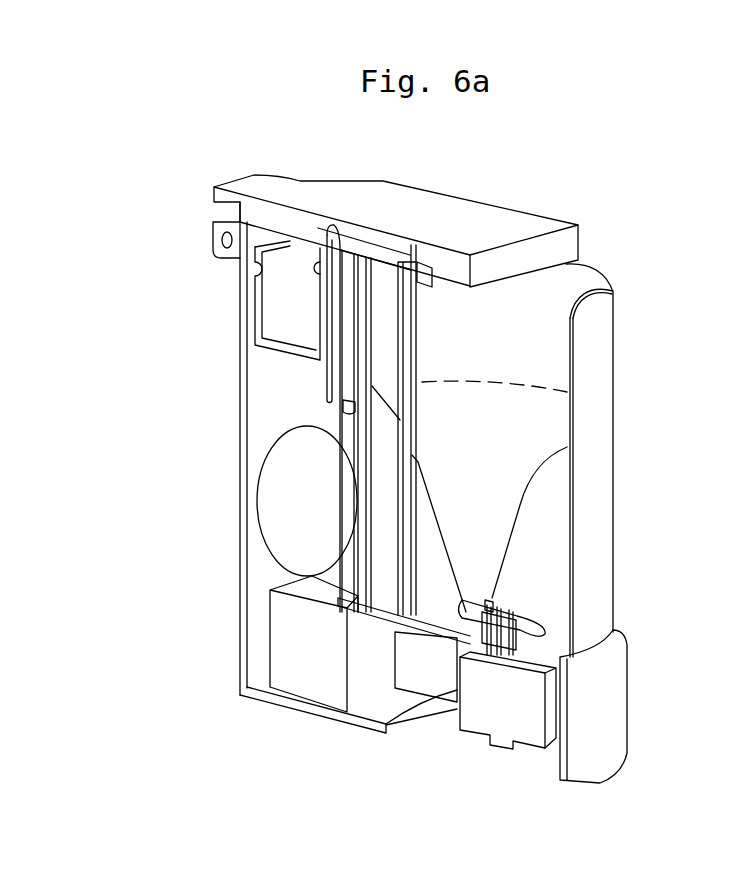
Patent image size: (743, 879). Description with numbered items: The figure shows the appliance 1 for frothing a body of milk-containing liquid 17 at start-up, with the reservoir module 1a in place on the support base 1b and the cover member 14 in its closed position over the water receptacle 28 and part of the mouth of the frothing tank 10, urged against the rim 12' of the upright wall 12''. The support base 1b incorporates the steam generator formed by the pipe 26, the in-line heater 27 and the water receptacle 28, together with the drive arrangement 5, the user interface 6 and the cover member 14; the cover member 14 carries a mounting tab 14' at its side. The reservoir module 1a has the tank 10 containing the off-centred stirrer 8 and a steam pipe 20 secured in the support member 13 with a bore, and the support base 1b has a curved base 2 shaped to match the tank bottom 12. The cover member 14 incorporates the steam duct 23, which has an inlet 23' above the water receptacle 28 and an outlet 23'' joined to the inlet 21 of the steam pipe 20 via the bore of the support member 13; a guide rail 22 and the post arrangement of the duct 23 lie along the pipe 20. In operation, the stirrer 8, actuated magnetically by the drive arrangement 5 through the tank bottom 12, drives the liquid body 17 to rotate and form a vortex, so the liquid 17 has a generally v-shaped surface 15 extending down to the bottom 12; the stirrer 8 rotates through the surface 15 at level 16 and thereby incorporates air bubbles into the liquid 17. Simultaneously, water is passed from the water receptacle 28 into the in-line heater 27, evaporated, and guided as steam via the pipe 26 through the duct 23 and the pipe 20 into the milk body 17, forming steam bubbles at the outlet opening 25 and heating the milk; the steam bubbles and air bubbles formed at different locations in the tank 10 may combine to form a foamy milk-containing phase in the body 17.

The appliance 1 is at (615, 148).
The reservoir module 1a is at (664, 268).
The support base 1b is at (183, 752).
The curved base 2 is at (436, 707).
The drive arrangement 5 is at (508, 700).
The user interface 6 is at (283, 662).
The stirrer 8 is at (527, 630).
The frothing tank 10 is at (494, 365).
The tank bottom 12 is at (433, 492).
The rim 12' is at (645, 314).
The upright wall 12'' is at (604, 255).
The support member 13 is at (428, 283).
The cover member 14 is at (396, 212).
The mounting tab 14' is at (180, 237).
The v-shaped surface 15 is at (523, 514).
The level 16 is at (489, 580).
The milk-containing liquid 17 is at (519, 596).
The steam pipe 20 is at (407, 430).
The inlet 21 is at (410, 283).
The guide rail 22 is at (403, 598).
The steam duct 23 is at (375, 231).
The inlet of steam duct 23' is at (319, 398).
The outlet of steam duct 23'' is at (434, 413).
The outlet opening 25 is at (427, 602).
The pipe 26 is at (327, 386).
The in-line heater 27 is at (290, 510).
The water receptacle 28 is at (272, 317).